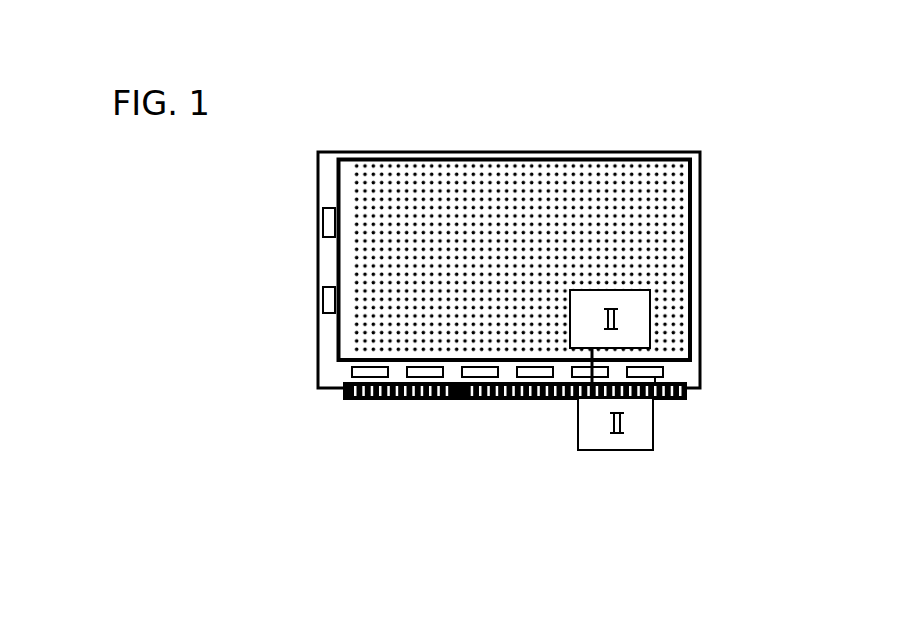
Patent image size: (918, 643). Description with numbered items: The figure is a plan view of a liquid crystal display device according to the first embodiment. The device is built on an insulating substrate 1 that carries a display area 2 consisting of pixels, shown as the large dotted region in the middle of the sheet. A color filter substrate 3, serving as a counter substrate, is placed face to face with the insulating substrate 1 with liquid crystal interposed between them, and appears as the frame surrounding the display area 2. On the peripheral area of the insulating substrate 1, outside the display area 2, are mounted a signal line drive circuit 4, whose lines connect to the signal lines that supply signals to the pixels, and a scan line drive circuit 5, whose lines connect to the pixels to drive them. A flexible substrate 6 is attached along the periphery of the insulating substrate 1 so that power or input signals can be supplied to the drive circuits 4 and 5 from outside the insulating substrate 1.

The insulating substrate 1 is at (330, 367).
The display area 2 is at (653, 240).
The color filter substrate 3 is at (695, 302).
The signal line drive circuit 4 is at (673, 400).
The scan line drive circuit 5 is at (323, 212).
The flexible substrate 6 is at (450, 400).